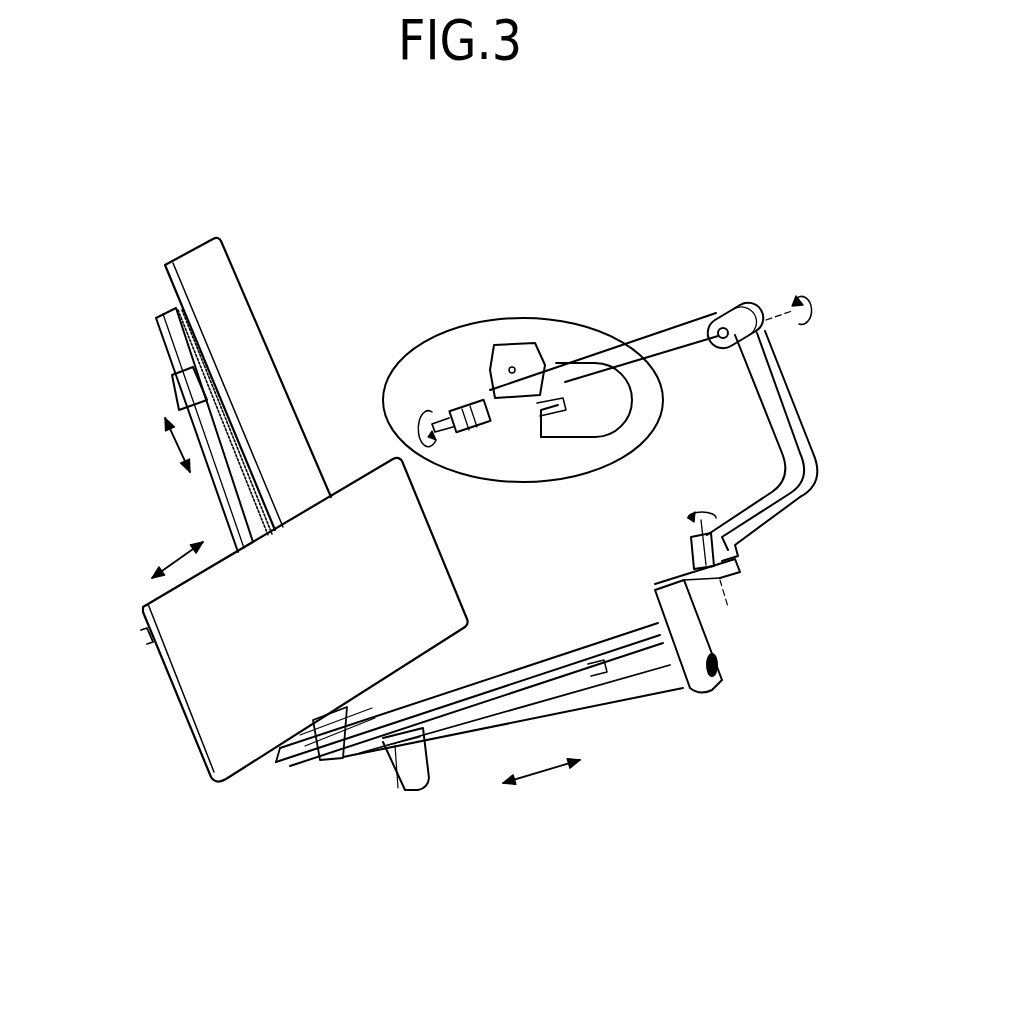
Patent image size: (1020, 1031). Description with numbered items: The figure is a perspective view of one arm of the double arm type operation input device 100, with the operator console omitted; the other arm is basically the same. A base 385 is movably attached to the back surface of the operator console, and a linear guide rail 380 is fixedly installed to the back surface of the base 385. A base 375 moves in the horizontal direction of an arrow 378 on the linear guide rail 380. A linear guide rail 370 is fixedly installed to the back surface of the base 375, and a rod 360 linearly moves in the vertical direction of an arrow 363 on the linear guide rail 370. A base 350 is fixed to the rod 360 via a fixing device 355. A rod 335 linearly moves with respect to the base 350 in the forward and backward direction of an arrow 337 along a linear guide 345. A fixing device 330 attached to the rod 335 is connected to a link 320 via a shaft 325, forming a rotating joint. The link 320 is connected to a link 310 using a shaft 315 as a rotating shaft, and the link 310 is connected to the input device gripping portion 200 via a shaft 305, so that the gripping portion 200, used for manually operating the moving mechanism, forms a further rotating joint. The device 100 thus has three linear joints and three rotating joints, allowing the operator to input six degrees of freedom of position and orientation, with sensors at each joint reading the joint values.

The operation input device 100 is at (425, 228).
The input device gripping portion 200 is at (513, 318).
The shaft 305 is at (524, 395).
The link 310 is at (657, 332).
The shaft 315 is at (717, 327).
The link 320 is at (773, 395).
The shaft 325 is at (722, 588).
The fixing device 330 is at (697, 677).
The rod 335 is at (634, 694).
The arrow 337 is at (545, 777).
The linear guide 345 is at (550, 683).
The base 350 is at (485, 680).
The fixing device 355 is at (330, 716).
The rod 360 is at (233, 492).
The arrow 363 is at (163, 447).
The linear guide rail 370 is at (213, 378).
The base 375 is at (265, 398).
The arrow 378 is at (160, 560).
The linear guide rail 380 is at (141, 645).
The base 385 is at (215, 710).